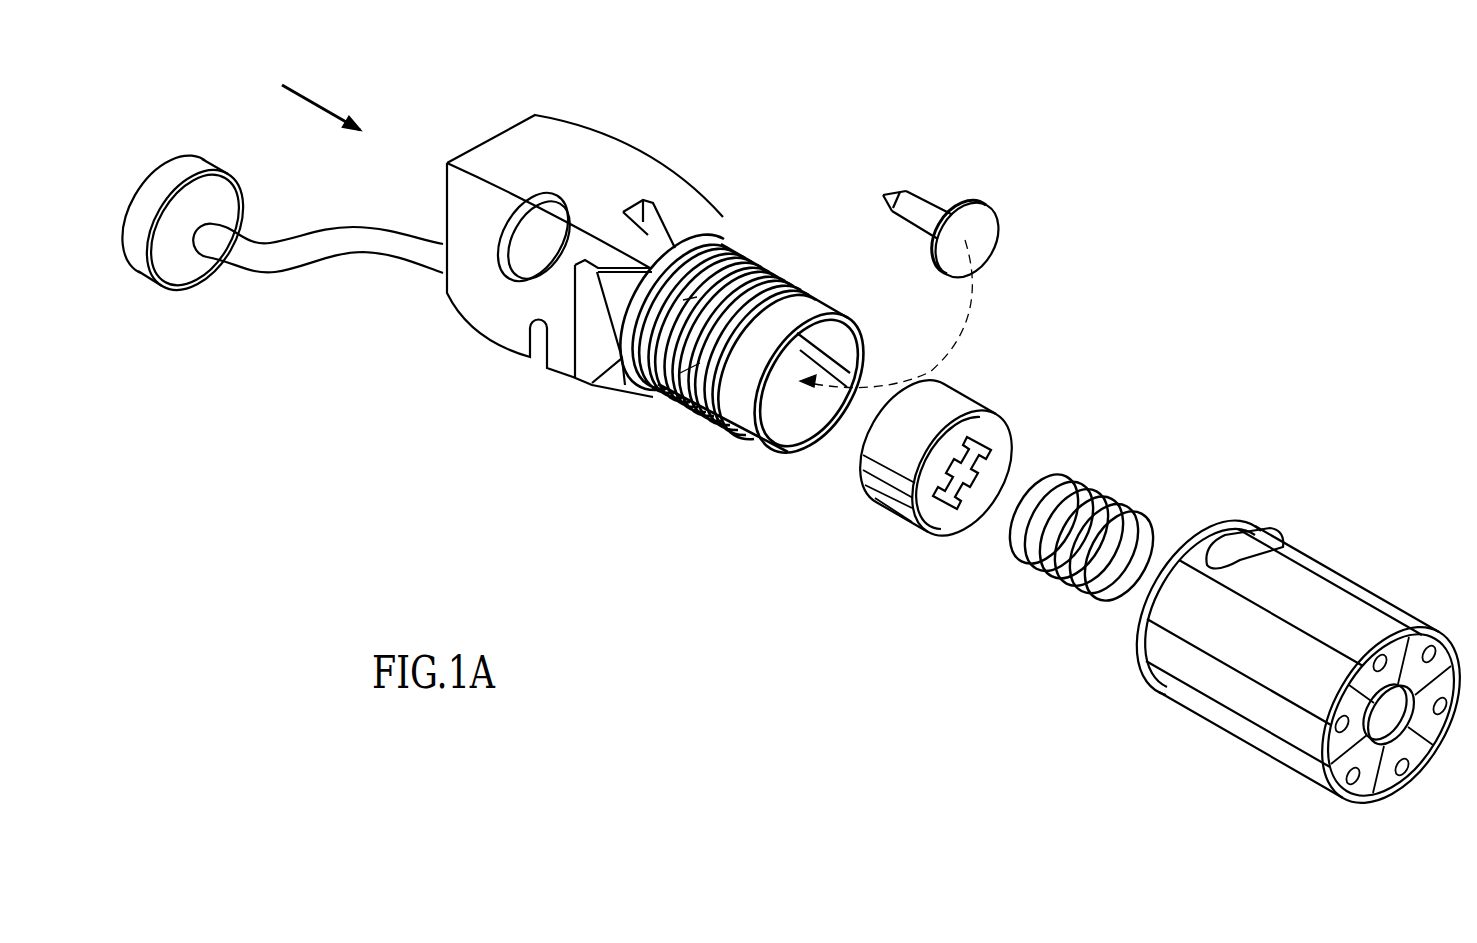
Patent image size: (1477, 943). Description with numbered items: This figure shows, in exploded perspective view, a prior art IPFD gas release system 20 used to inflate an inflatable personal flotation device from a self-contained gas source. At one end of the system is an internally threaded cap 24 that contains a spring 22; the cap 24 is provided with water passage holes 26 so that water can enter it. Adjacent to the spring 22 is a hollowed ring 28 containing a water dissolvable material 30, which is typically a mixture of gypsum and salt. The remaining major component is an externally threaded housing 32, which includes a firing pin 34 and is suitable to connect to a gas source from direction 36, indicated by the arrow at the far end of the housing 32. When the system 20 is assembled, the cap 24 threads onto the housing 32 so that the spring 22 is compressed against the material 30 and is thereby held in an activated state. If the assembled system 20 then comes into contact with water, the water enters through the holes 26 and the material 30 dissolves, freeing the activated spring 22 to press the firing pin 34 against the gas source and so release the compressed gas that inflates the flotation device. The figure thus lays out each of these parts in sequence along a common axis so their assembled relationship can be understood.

The gas release system 20 is at (1180, 230).
The spring 22 is at (1040, 575).
The internally threaded cap 24 is at (1258, 752).
The water passage holes 26 is at (1245, 550).
The hollowed ring 28 is at (955, 395).
The water dissolvable material 30 is at (942, 513).
The externally threaded housing 32 is at (670, 403).
The firing pin 34 is at (930, 207).
The direction 36 is at (313, 100).